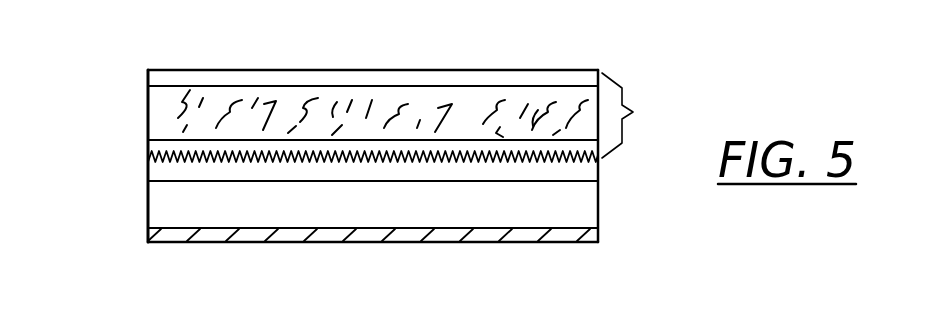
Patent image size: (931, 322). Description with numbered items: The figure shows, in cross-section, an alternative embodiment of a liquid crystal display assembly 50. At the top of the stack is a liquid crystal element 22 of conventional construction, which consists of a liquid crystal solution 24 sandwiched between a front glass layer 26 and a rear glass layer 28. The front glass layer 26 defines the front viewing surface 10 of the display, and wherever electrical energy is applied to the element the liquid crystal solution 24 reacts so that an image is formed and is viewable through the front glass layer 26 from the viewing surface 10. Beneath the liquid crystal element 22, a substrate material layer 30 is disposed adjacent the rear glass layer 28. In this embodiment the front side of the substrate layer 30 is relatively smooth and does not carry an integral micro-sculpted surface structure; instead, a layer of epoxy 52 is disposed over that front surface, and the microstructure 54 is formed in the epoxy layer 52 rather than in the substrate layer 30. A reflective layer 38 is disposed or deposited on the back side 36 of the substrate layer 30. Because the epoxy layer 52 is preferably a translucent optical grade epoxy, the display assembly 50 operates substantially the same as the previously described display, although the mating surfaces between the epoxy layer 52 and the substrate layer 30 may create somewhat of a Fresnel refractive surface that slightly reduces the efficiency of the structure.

The front viewing surface 10 is at (469, 27).
The liquid crystal display assembly 50 is at (132, 52).
The front glass layer 26 is at (155, 77).
The liquid crystal solution 24 is at (158, 108).
The rear glass layer 28 is at (158, 147).
The epoxy layer 52 is at (158, 170).
The liquid crystal element 22 is at (640, 156).
The substrate material layer 30 is at (578, 209).
The microstructure 54 is at (403, 152).
The reflective layer 38 is at (492, 237).
The back side 36 is at (533, 243).